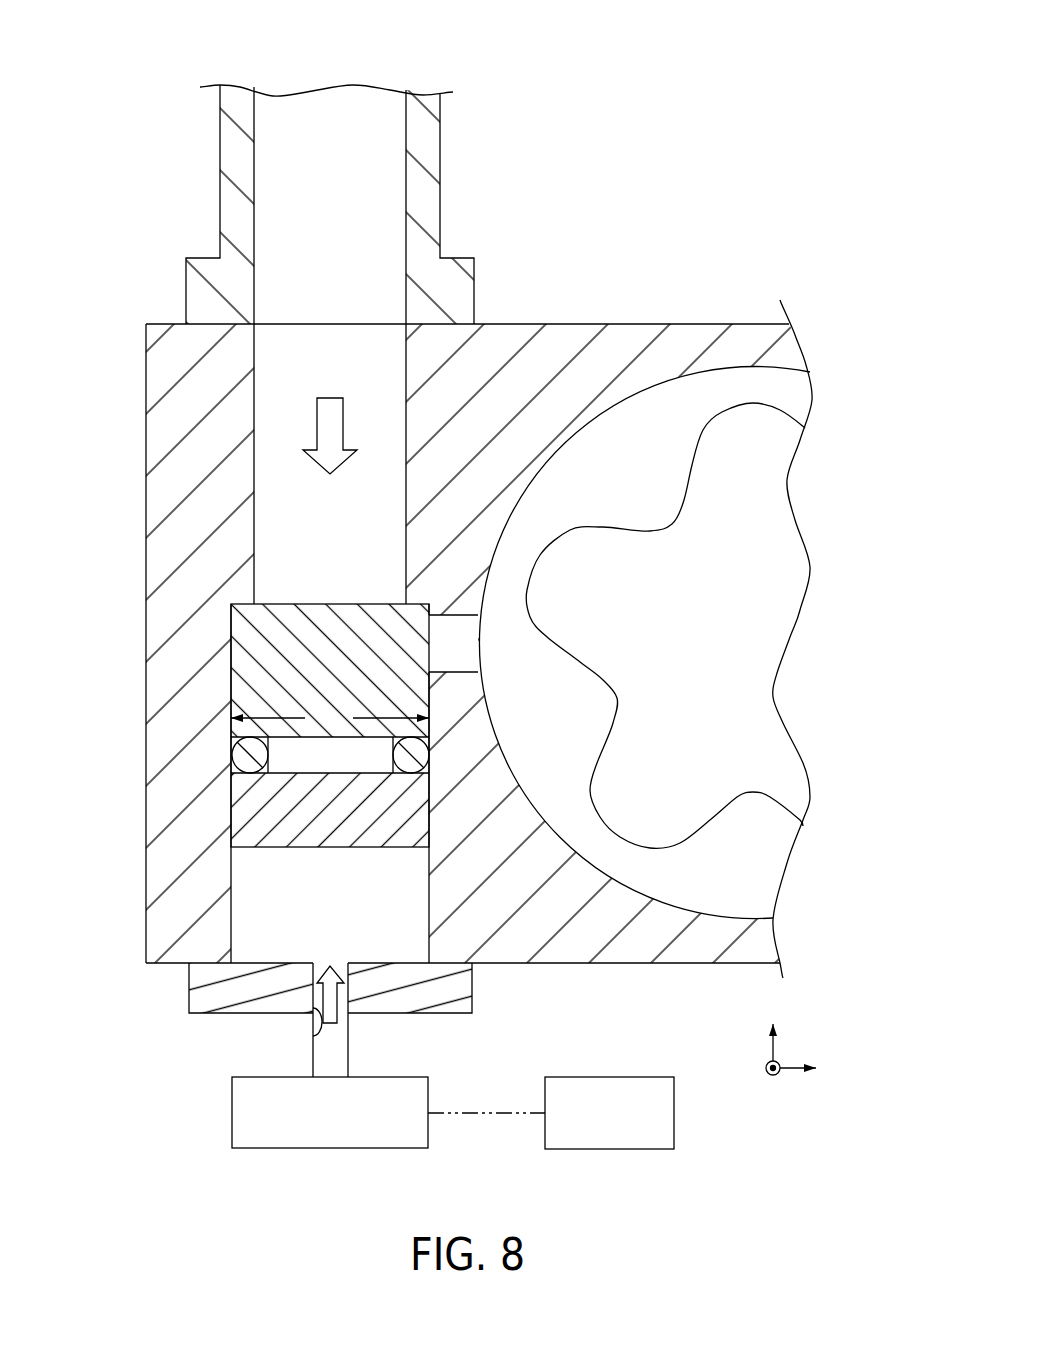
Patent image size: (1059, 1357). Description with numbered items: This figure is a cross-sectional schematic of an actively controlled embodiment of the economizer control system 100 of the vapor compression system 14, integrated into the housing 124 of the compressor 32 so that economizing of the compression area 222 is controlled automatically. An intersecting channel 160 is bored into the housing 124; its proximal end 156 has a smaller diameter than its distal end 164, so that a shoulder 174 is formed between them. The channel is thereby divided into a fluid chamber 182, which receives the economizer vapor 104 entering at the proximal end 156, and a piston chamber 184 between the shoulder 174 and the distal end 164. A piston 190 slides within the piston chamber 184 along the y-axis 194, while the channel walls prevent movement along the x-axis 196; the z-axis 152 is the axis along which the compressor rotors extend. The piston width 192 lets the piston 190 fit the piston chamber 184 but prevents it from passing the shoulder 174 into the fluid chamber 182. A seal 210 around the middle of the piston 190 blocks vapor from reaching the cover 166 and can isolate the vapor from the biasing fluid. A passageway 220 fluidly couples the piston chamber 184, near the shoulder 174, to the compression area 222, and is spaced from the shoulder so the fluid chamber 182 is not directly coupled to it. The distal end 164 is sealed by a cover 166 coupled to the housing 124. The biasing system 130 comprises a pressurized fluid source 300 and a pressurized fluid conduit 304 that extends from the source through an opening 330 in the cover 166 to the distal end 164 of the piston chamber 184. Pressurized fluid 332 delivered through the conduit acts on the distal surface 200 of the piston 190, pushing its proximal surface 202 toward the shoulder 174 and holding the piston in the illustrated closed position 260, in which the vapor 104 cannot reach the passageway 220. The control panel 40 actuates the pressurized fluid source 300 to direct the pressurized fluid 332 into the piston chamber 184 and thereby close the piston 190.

The vapor compression system 14 is at (768, 33).
The economizer control system 100 is at (665, 112).
The compressor 32 is at (712, 163).
The proximal end 156 is at (392, 354).
The housing 124 is at (128, 418).
The fluid chamber 182 is at (303, 407).
The vapor 104 is at (345, 425).
The proximal surface 202 is at (342, 603).
The intersecting channel 160 is at (245, 580).
The shoulder 174 is at (223, 600).
The closed position 260 is at (224, 679).
The piston 190 is at (320, 722).
The piston width 192 is at (330, 719).
The passageway 220 is at (475, 606).
The seal 210 is at (430, 762).
The compression area 222 is at (746, 874).
The distal surface 200 is at (333, 848).
The piston chamber 184 is at (295, 912).
The distal end 164 is at (240, 932).
The biasing system 130 is at (165, 1042).
The opening 330 is at (318, 1037).
The pressurized fluid 332 is at (326, 1040).
The pressurized fluid conduit 304 is at (350, 1035).
The cover 166 is at (440, 1020).
The pressurized fluid source 300 is at (332, 1150).
The control panel 40 is at (610, 1150).
The y-axis 194 is at (770, 1040).
The z-axis 152 is at (765, 1072).
The x-axis 196 is at (797, 1068).